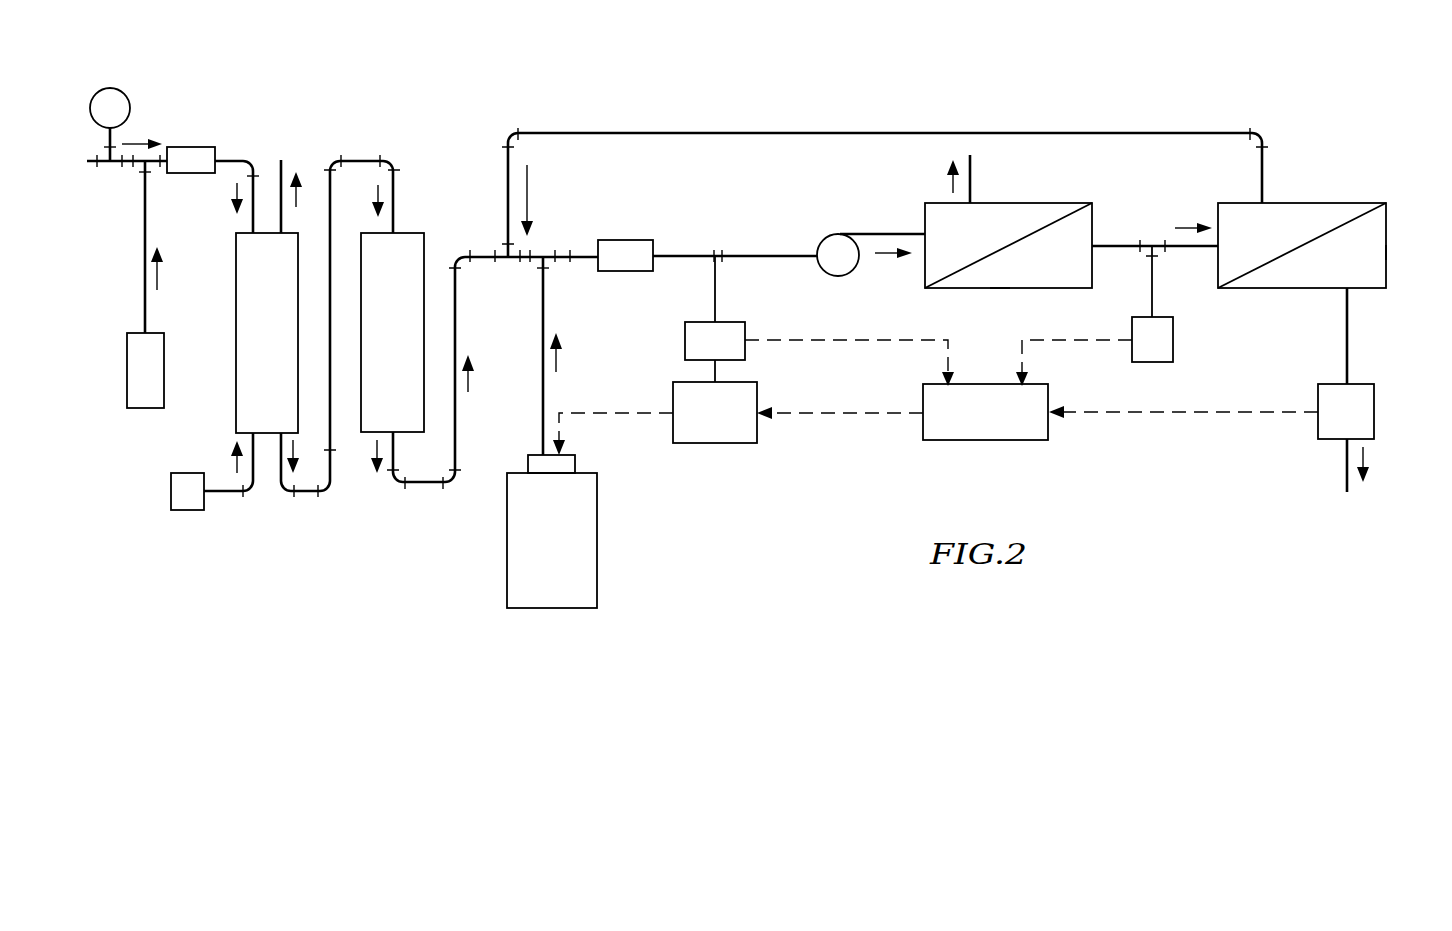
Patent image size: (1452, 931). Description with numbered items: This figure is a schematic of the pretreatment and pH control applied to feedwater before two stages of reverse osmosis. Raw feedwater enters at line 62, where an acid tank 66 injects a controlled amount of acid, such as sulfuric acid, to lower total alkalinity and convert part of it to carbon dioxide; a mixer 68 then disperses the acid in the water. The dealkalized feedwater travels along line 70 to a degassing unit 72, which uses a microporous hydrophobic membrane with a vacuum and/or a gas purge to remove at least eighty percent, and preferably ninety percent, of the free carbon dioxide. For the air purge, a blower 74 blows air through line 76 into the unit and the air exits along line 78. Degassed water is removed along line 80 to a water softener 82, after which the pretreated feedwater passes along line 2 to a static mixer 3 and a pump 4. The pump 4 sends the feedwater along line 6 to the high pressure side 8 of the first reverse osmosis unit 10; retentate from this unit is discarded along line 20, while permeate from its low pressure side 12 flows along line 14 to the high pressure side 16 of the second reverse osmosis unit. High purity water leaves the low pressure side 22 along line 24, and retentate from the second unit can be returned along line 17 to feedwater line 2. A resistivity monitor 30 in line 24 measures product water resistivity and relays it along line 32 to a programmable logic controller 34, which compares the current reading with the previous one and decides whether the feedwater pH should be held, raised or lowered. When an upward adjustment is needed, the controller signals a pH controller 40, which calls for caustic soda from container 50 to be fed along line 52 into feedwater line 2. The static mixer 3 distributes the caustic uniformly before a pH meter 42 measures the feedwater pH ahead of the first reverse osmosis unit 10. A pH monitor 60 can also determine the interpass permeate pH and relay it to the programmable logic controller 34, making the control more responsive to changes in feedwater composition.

The feedwater line 2 is at (485, 258).
The static mixer 3 is at (627, 271).
The pump 4 is at (829, 236).
The line 6 is at (885, 234).
The high pressure side 8 is at (939, 210).
The first reverse osmosis unit 10 is at (1048, 184).
The low pressure side 12 is at (1035, 288).
The line 14 is at (1118, 246).
The high pressure side 16 is at (1230, 212).
The line 17 is at (779, 132).
The line 20 is at (970, 192).
The low pressure side 22 is at (1383, 258).
The line 24 is at (1347, 340).
The resistivity monitor 30 is at (1315, 426).
The line 32 is at (1170, 412).
The programmable logic controller 34 is at (992, 442).
The pH controller 40 is at (722, 443).
The pH meter 42 is at (739, 322).
The container 50 is at (597, 545).
The line 52 is at (543, 330).
The pH monitor 60 is at (1175, 340).
The line 62 is at (94, 164).
The acid tank 66 is at (120, 93).
The mixer 68 is at (188, 147).
The line 70 is at (227, 159).
The degassing unit 72 is at (236, 281).
The blower 74 is at (190, 473).
The line 76 is at (225, 491).
The line 78 is at (282, 164).
The line 80 is at (333, 458).
The water softener 82 is at (425, 250).